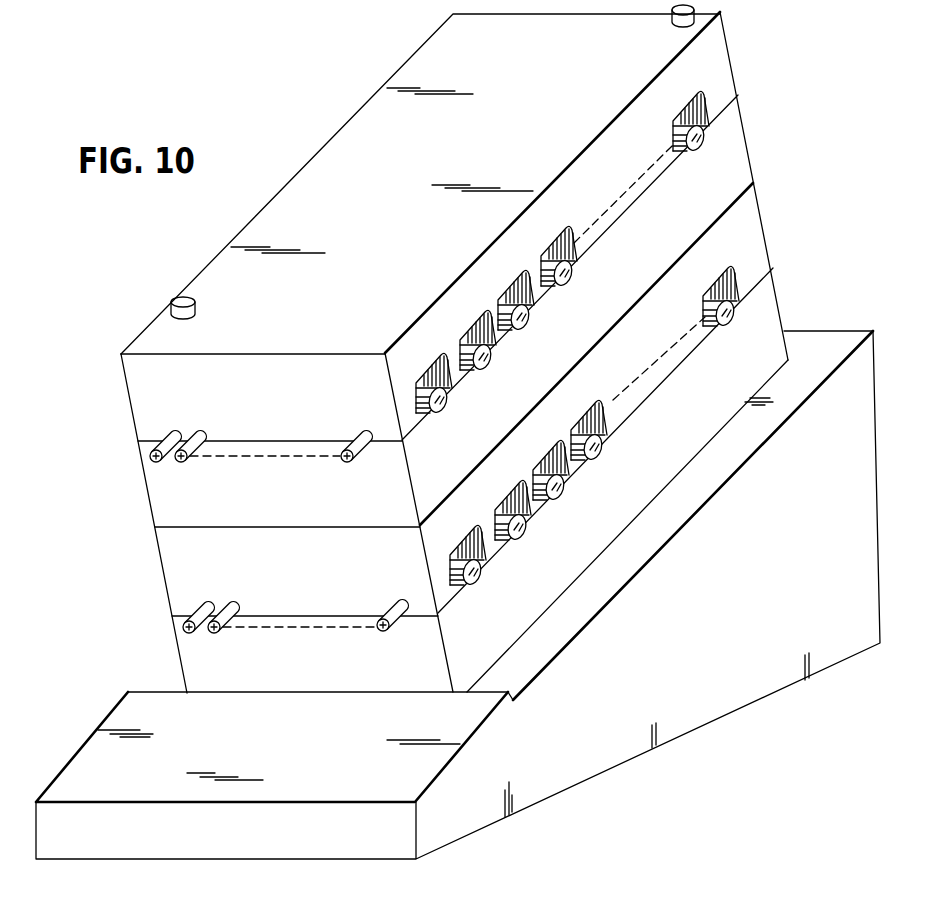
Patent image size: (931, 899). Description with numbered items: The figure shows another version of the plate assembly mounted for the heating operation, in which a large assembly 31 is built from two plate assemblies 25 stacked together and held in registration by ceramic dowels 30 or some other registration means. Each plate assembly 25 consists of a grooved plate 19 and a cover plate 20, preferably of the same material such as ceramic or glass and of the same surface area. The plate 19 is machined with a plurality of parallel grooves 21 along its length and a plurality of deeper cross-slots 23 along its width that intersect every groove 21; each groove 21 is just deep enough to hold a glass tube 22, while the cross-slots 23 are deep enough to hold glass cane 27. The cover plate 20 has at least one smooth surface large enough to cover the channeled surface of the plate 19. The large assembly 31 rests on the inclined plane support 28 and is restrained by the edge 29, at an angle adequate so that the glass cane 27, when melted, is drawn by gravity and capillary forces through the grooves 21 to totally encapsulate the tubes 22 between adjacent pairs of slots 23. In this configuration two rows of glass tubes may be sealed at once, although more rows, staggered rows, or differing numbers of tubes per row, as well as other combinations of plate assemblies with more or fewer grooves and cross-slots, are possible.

The plate 19 is at (137, 388).
The cover plate 20 is at (160, 512).
The grooves 21 is at (203, 445).
The glass tube 22 is at (183, 459).
The cross-slots 23 is at (580, 283).
The plate assembly 25 is at (794, 233).
The glass cane 27 is at (480, 368).
The inclined plane support 28 is at (698, 712).
The edge 29 is at (497, 688).
The ceramic dowels 30 is at (674, 20).
The large assembly 31 is at (181, 238).